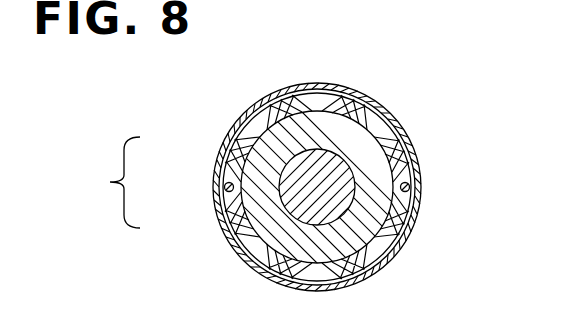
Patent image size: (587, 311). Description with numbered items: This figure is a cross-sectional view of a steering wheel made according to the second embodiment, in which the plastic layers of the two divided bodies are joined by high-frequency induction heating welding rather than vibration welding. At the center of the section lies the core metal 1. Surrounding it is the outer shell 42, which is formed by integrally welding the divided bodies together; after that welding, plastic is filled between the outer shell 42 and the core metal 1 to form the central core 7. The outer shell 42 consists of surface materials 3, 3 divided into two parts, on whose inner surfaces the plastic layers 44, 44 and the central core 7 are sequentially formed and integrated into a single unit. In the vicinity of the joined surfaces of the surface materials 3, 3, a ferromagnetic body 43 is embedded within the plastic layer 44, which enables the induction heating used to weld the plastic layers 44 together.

The core metal 1 is at (388, 107).
The surface material 3 is at (222, 143).
The central core 7 is at (392, 247).
The outer shell 42 is at (106, 182).
The ferromagnetic body 43 is at (422, 173).
The plastic layer 44 is at (218, 165).